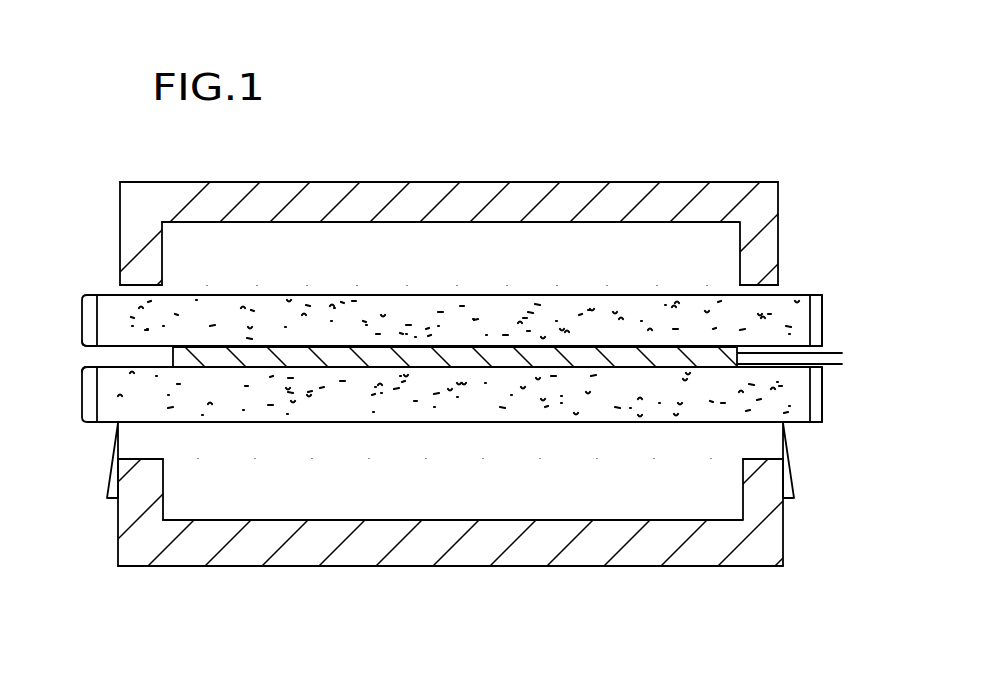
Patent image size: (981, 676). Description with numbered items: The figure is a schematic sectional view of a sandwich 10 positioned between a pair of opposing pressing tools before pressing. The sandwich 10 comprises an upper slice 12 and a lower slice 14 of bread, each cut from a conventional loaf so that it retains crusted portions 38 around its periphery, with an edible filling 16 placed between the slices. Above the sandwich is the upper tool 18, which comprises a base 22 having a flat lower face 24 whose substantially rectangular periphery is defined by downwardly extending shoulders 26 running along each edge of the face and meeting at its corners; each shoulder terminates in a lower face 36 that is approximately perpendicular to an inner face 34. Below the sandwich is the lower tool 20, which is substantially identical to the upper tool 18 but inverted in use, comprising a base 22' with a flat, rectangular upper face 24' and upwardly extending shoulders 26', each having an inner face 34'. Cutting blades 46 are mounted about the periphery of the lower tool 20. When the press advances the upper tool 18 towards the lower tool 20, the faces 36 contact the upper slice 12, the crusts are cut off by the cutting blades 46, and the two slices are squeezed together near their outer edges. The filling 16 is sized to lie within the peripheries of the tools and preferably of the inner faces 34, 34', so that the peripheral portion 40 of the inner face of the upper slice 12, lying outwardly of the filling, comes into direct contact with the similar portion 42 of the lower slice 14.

The sandwich 10 is at (72, 302).
The upper slice 12 is at (449, 325).
The lower slice 14 is at (449, 391).
The edible filling 16 is at (524, 360).
The upper tool 18 is at (469, 199).
The lower tool 20 is at (441, 546).
The base 22 is at (449, 162).
The lower face 24 is at (483, 209).
The shoulders 26 is at (120, 233).
The inner face 34 is at (470, 233).
The lower face of shoulder 36 is at (767, 288).
The crusted portions 38 is at (822, 302).
The peripheral portion 40 is at (90, 350).
The peripheral portion 42 is at (113, 366).
The cutting blades 46 is at (108, 480).
The base 22' is at (450, 593).
The upper face 24' is at (441, 544).
The shoulders 26' is at (107, 512).
The inner face 34' is at (450, 512).